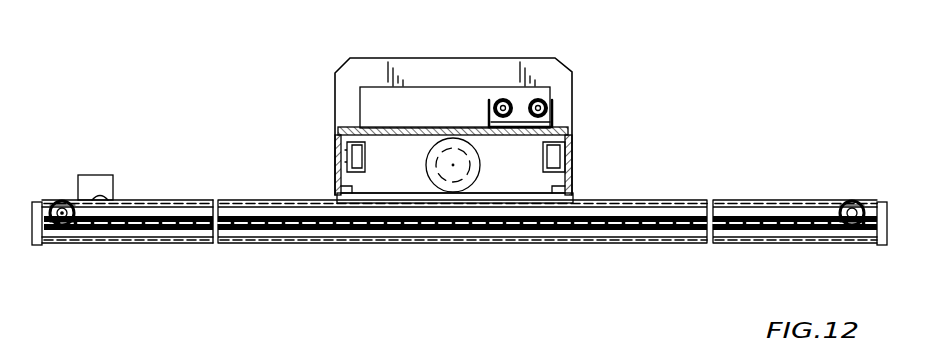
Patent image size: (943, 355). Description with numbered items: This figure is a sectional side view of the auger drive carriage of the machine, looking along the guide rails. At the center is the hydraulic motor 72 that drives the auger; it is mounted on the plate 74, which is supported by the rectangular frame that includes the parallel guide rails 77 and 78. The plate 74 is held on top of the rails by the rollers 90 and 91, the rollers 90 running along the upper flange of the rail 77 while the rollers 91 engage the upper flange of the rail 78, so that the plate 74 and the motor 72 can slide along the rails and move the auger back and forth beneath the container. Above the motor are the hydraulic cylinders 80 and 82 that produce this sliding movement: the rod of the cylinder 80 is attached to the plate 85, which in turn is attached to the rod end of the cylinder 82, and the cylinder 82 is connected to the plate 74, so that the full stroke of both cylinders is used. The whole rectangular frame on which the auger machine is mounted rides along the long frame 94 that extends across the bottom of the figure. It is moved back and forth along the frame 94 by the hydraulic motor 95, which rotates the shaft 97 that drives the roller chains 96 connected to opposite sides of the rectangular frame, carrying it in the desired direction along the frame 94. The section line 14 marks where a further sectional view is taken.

The section line 14- 14 is at (563, 32).
The hydraulic motor 72 is at (475, 170).
The plate 74 is at (413, 127).
The guide rail 77 is at (566, 175).
The guide rail 78 is at (335, 150).
The hydraulic cylinder 80 is at (548, 92).
The hydraulic cylinder 82 is at (500, 98).
The plate 85 is at (552, 112).
The rollers 90 is at (556, 148).
The rollers 91 is at (347, 170).
The frame 94 is at (773, 200).
The hydraulic motor 95 is at (99, 173).
The roller chains 96 is at (187, 200).
The shaft 97 is at (66, 222).